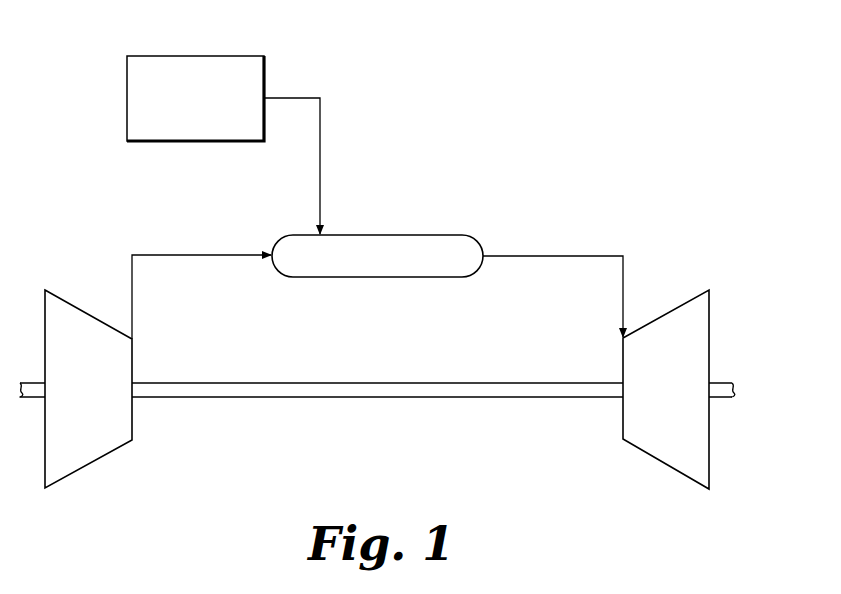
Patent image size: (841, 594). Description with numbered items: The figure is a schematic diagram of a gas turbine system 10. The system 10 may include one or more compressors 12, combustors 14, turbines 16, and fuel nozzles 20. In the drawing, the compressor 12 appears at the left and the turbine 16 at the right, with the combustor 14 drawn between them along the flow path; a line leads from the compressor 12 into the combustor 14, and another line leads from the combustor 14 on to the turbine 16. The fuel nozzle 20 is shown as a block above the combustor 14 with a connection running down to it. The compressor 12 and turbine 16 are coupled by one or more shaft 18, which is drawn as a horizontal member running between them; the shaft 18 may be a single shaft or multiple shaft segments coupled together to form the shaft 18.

The gas turbine system 10 is at (610, 175).
The compressor 12 is at (90, 465).
The combustor 14 is at (378, 235).
The turbine 16 is at (712, 305).
The shaft 18 is at (378, 398).
The fuel nozzle 20 is at (264, 56).